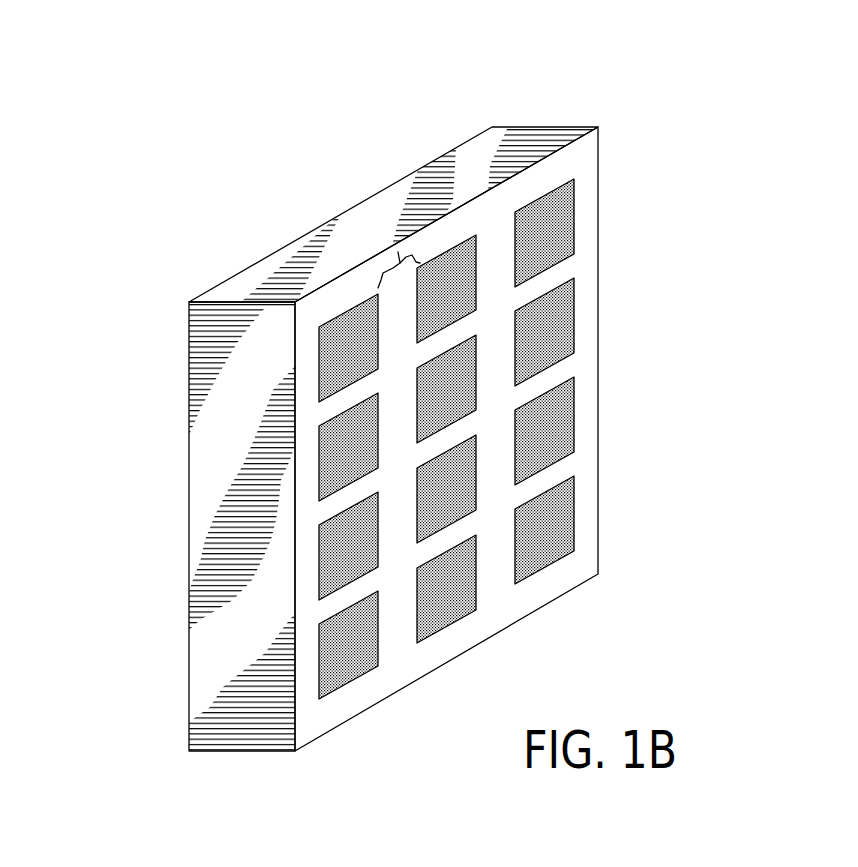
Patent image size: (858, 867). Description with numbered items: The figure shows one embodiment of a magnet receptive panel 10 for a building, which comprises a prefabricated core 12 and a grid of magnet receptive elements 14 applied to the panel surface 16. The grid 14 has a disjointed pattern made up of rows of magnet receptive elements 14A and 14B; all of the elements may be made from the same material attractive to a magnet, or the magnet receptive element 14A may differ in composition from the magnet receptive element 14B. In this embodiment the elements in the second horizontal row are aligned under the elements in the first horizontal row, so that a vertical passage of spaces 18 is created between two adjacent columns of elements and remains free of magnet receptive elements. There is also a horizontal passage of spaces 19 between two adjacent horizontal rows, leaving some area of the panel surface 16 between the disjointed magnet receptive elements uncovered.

The magnet receptive panel 10 is at (488, 174).
The prefabricated core 12 is at (170, 526).
The grid of magnet receptive elements 14 is at (400, 470).
The magnet receptive element 14A is at (399, 400).
The magnet receptive element 14B is at (579, 233).
The panel surface 16 is at (518, 439).
The vertical passage of spaces 18 is at (372, 200).
The horizontal passage of spaces 19 is at (610, 480).